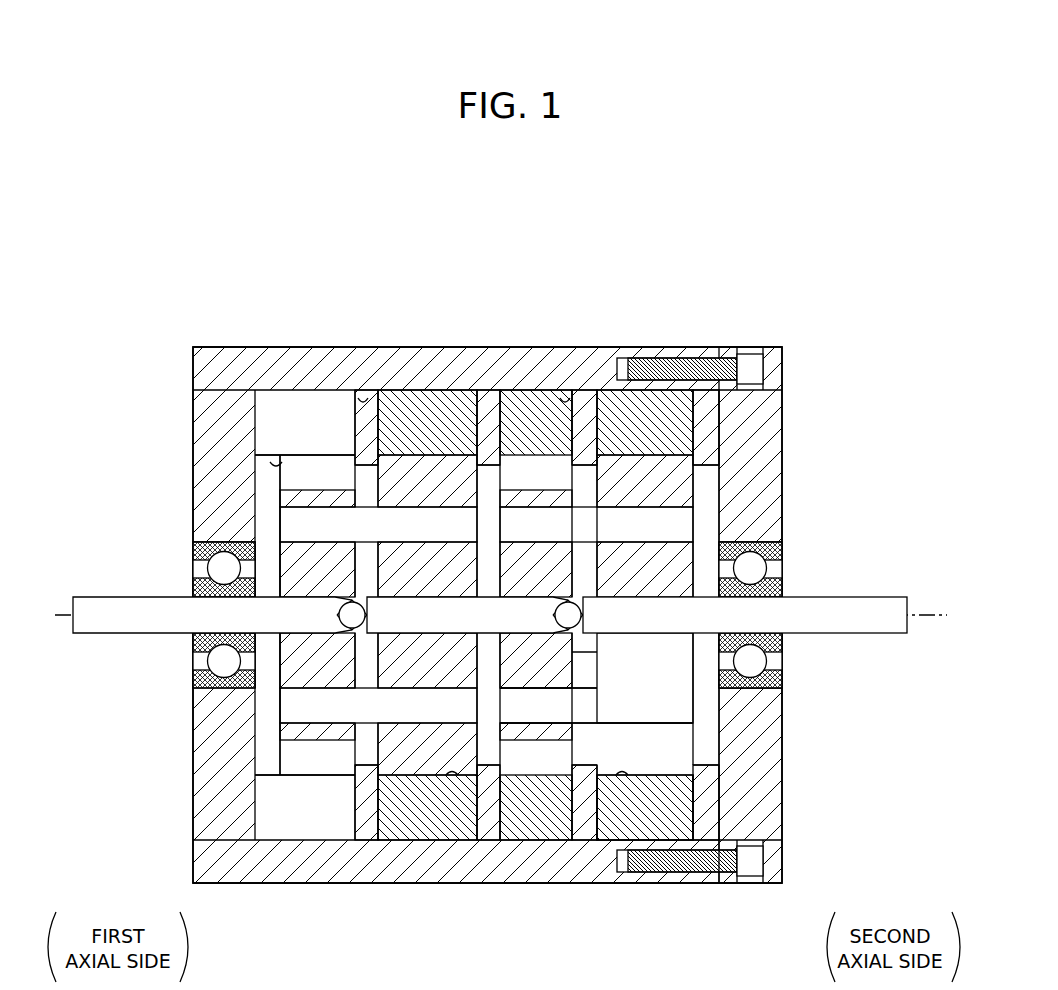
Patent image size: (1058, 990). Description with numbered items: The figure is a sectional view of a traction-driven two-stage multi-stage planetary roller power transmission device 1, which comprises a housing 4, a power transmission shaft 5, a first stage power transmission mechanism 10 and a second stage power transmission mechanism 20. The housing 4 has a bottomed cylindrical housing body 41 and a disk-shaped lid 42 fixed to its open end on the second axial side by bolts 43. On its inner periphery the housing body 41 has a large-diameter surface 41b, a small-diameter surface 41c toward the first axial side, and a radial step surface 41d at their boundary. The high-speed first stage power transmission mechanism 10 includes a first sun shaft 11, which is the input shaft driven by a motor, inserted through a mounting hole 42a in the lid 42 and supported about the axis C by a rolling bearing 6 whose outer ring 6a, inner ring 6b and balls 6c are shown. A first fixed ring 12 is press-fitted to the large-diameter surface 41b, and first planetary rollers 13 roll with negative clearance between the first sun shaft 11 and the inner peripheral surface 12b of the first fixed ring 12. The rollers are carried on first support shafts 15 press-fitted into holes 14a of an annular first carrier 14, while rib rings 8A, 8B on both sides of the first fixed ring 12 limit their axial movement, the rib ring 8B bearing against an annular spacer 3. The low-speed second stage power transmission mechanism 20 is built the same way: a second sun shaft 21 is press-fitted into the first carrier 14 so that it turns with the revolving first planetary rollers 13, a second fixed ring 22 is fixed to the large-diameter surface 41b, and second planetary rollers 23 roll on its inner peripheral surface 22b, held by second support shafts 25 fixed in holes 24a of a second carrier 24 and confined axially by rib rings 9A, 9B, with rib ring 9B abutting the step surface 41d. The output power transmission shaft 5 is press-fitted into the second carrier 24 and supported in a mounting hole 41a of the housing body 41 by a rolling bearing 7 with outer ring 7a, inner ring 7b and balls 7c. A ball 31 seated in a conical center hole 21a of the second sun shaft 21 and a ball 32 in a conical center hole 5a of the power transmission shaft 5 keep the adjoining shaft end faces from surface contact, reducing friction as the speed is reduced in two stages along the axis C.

The multi-stage planetary roller power transmission device 1 is at (238, 248).
The spacer 3 is at (524, 408).
The housing 4 is at (205, 345).
The power transmission shaft 5 is at (235, 601).
The center hole 5a is at (362, 628).
The rolling bearing 6 is at (799, 627).
The outer ring 6a is at (785, 681).
The inner ring 6b is at (785, 640).
The balls 6c is at (767, 661).
The rolling bearing 7 is at (172, 626).
The outer ring 7a is at (193, 681).
The inner ring 7b is at (193, 640).
The balls 7c is at (212, 661).
The rib ring 8A is at (705, 428).
The rib ring 8B is at (586, 418).
The rib ring 9A is at (495, 423).
The rib ring 9B is at (362, 427).
The first stage power transmission mechanism 10 is at (655, 762).
The first sun shaft 11 is at (895, 597).
The first fixed ring 12 is at (655, 420).
The inner peripheral surface 12b is at (622, 772).
The first planetary rollers 13 is at (672, 487).
The first carrier 14 is at (556, 735).
The holes 14a is at (548, 544).
The first support shafts 15 is at (680, 522).
The second stage power transmission mechanism 20 is at (338, 762).
The second sun shaft 21 is at (515, 640).
The center hole 21a is at (586, 628).
The second fixed ring 22 is at (447, 427).
The inner peripheral surface 22b is at (452, 772).
The second planetary rollers 23 is at (411, 460).
The second carrier 24 is at (280, 672).
The holes 24a is at (320, 544).
The second support shafts 25 is at (290, 521).
The ball 31 is at (580, 605).
The ball 32 is at (360, 605).
The housing body 41 is at (205, 400).
The mounting hole 41a is at (193, 550).
The large-diameter surface 41b is at (565, 400).
The small-diameter surface 41c is at (278, 460).
The step surface 41d is at (362, 400).
The lid 42 is at (770, 803).
The mounting hole 42a is at (782, 548).
The bolts 43 is at (750, 354).
The axis C is at (930, 620).